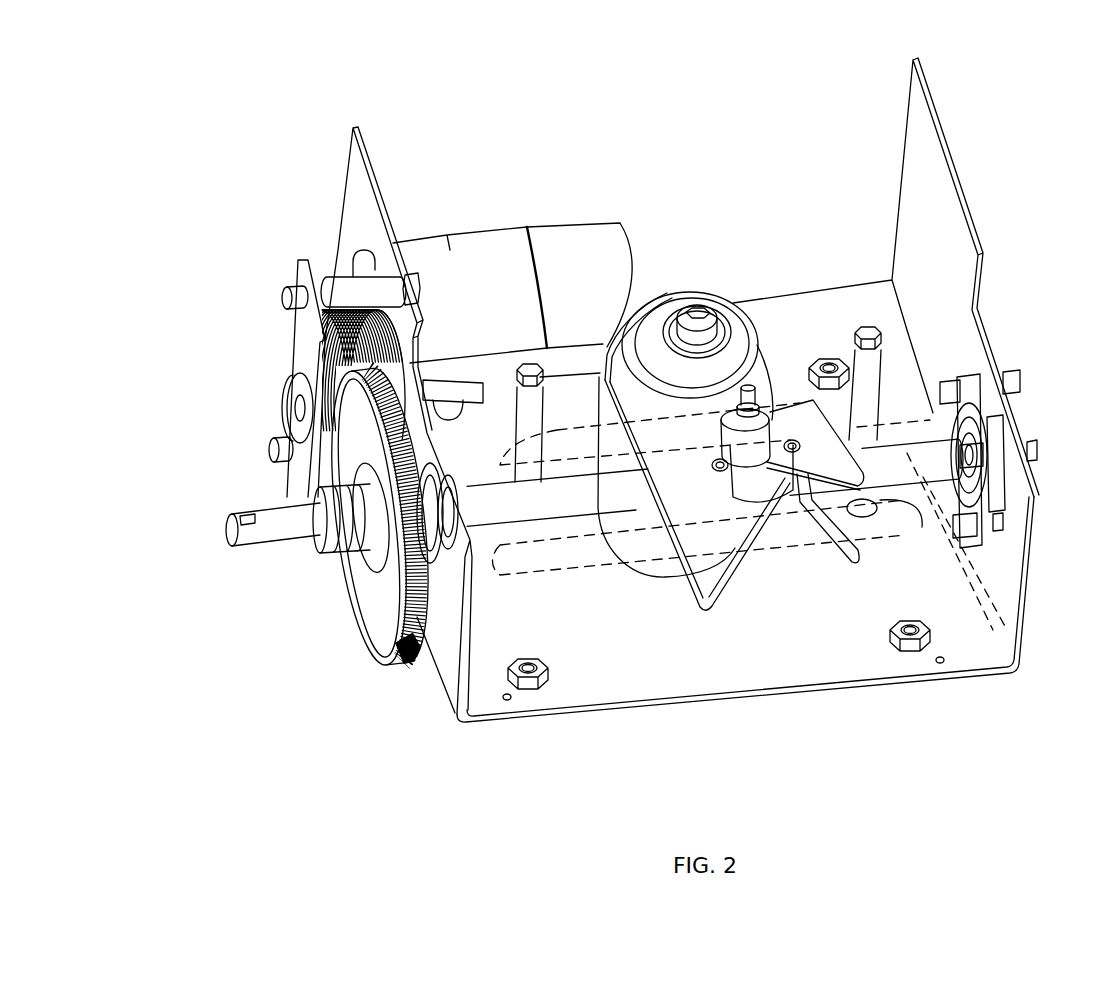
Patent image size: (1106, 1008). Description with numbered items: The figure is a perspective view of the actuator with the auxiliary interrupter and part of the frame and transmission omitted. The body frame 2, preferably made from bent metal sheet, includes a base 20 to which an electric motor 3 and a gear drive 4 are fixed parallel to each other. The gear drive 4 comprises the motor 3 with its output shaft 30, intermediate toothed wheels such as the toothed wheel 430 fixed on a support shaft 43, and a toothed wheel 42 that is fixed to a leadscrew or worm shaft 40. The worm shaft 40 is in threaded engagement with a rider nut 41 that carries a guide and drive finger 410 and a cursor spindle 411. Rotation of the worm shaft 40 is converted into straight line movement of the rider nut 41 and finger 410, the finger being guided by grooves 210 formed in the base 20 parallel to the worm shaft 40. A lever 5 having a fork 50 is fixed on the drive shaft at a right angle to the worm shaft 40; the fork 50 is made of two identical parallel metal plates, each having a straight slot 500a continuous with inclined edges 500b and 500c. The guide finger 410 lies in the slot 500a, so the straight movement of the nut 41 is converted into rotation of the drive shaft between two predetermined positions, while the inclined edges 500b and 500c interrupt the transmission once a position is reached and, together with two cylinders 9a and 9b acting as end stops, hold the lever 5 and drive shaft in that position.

The body frame 2 is at (684, 446).
The base 20 is at (667, 650).
The grooves 210 is at (1000, 672).
The electric motor 3 is at (572, 240).
The output shaft 30 is at (323, 337).
The gear drive 4 is at (240, 452).
The worm shaft 40 is at (527, 510).
The rider nut 41 is at (763, 530).
The guide and drive finger 410 is at (760, 428).
The cursor spindle 411 is at (752, 392).
The toothed wheel 42 is at (390, 637).
The support shaft 43 is at (447, 393).
The toothed wheel 430 is at (352, 351).
The lever 5 is at (530, 403).
The fork 50 is at (813, 548).
The straight slot 500a is at (832, 470).
The inclined edge 500b is at (727, 450).
The inclined edge 500c is at (850, 550).
The cylinder 9a is at (618, 222).
The cylinder 9b is at (873, 373).